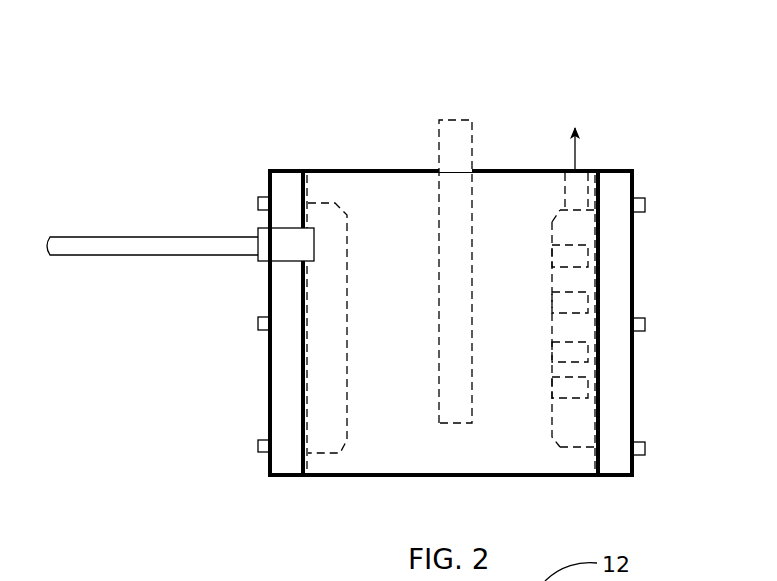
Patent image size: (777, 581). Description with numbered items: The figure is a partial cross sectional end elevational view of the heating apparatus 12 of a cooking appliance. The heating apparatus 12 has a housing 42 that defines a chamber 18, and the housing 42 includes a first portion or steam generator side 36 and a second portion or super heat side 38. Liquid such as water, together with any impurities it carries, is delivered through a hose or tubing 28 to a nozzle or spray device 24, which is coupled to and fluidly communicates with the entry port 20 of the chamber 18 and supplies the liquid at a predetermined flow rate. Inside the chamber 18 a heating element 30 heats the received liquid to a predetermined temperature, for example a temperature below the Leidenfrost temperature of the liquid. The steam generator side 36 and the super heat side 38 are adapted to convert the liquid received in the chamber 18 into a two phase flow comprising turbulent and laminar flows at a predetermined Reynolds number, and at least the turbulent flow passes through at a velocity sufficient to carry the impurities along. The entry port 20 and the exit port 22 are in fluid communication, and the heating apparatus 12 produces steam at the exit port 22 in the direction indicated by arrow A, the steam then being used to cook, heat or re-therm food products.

The heating apparatus 12 is at (470, 88).
The chamber 18 is at (406, 283).
The entry port 20 is at (240, 274).
The exit port 22 is at (588, 173).
The spray device 24 is at (285, 228).
The tubing 28 is at (122, 237).
The heating element 30 is at (455, 120).
The steam generator side 36 is at (248, 351).
The super heat side 38 is at (656, 368).
The housing 42 is at (266, 461).
The arrow A is at (575, 135).